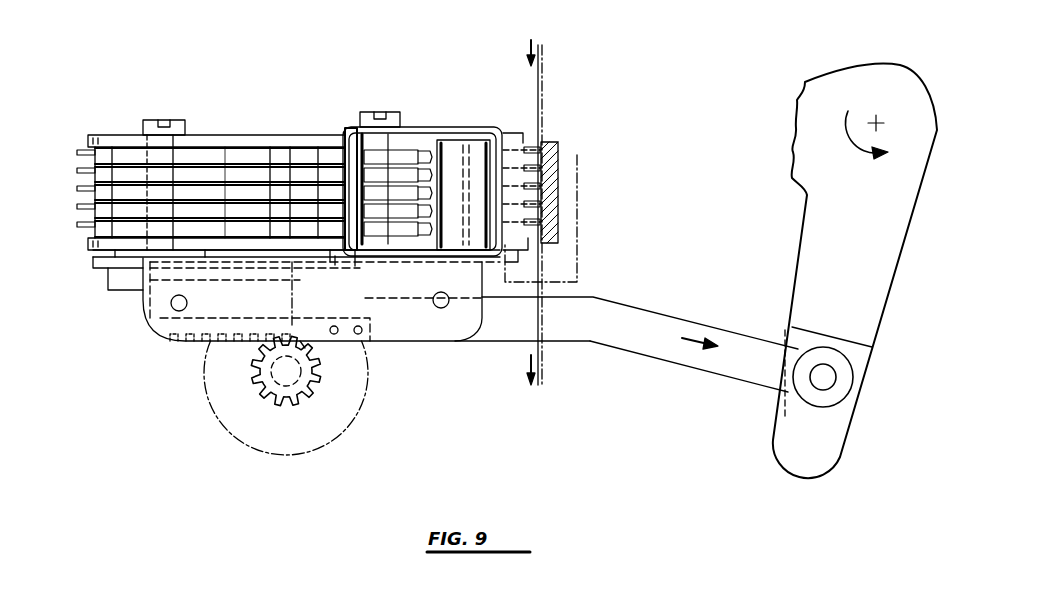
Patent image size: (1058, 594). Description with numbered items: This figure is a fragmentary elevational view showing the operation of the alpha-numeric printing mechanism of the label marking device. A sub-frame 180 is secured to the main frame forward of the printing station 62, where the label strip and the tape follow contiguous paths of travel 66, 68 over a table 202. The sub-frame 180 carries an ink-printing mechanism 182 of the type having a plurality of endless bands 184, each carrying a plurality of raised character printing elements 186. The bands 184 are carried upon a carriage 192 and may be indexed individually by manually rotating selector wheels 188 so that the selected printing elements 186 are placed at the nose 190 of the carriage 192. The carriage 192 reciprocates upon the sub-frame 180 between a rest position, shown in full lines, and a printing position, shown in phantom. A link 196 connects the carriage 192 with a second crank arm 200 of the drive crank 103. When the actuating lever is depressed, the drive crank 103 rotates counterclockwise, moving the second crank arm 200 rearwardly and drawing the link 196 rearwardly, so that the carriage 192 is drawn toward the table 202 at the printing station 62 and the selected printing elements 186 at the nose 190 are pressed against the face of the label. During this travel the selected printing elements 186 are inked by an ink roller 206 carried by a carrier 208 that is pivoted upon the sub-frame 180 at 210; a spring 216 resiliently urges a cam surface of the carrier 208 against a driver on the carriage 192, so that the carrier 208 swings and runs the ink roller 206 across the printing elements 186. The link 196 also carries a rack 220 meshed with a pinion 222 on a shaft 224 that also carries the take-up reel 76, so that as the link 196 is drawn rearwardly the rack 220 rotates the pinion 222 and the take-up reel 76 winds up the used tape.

The printing station 62 is at (578, 222).
The path of travel 66 is at (540, 95).
The path of travel 68 is at (538, 90).
The take-up reel 76 is at (324, 436).
The drive crank 103 is at (878, 70).
The sub-frame 180 is at (160, 318).
The ink-printing mechanism 182 is at (215, 133).
The endless bands 184 is at (212, 198).
The printing elements 186 is at (438, 165).
The selector wheels 188 is at (80, 224).
The nose 190 is at (422, 191).
The carriage 192 is at (306, 142).
The link 196 is at (630, 352).
The second crank arm 200 is at (878, 316).
The table 202 is at (560, 150).
The ink roller 206 is at (472, 238).
The carrier 208 is at (496, 235).
The pivot 210 is at (352, 246).
The spring 216 is at (310, 262).
The rack 220 is at (190, 345).
The pinion 222 is at (272, 402).
The shaft 224 is at (305, 386).